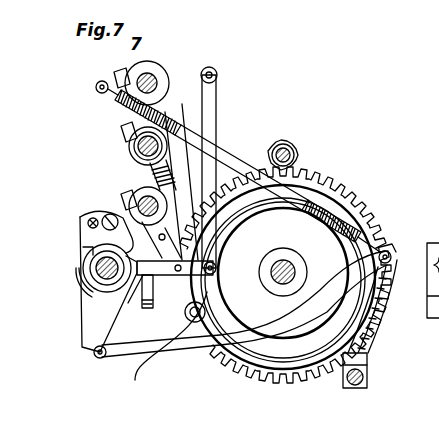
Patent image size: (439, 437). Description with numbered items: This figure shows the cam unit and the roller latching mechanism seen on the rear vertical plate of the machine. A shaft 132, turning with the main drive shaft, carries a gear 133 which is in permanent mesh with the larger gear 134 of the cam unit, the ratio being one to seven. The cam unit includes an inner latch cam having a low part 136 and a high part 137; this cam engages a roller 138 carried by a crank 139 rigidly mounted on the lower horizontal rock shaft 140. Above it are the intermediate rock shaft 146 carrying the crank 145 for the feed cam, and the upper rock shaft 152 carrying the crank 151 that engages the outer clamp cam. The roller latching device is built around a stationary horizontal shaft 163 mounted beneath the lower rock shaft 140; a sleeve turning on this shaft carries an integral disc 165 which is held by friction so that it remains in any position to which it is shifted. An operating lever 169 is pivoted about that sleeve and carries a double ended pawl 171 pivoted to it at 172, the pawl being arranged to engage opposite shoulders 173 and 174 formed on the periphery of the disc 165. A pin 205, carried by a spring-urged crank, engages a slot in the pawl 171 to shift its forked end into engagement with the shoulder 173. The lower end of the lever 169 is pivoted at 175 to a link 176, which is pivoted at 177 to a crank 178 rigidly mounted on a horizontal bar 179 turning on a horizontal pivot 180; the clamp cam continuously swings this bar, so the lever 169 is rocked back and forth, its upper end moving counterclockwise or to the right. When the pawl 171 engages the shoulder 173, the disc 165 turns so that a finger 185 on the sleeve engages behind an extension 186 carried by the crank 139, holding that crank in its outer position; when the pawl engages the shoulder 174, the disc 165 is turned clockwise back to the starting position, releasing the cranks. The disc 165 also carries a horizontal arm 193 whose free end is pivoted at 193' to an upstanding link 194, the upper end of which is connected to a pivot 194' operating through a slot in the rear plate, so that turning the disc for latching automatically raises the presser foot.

The larger gear 134 is at (277, 368).
The high part of latch cam 137 is at (313, 352).
The low part of latch cam 136 is at (277, 207).
The crank 139 is at (212, 283).
The roller 138 is at (200, 325).
The upstanding link 194 is at (233, 171).
The pivot 194' is at (236, 76).
The pivotal connection 193' is at (235, 259).
The crank 151 is at (215, 158).
The upper rock shaft 152 is at (152, 78).
The intermediate horizontal rock shaft 146 is at (132, 142).
The crank 145 is at (134, 150).
The lower horizontal rock shaft 140 is at (139, 198).
The pivot of pawl 172 is at (104, 216).
The double ended pawl 171 is at (97, 218).
The pin 205 is at (88, 224).
The horizontal crank or arm 193 is at (170, 300).
The shoulder 174 is at (97, 259).
The shoulder 173 is at (90, 252).
The annular flange or disc 165 is at (86, 283).
The operating lever 169 is at (93, 313).
The horizontal shaft 163 is at (94, 319).
The finger 185 is at (130, 303).
The pivotal connection 175 is at (96, 357).
The link 176 is at (182, 342).
The extension 186 is at (171, 342).
The pivotal connection 177 is at (392, 248).
The crank 178 is at (389, 305).
The horizontal bar 179 is at (366, 367).
The horizontal pivot 180 is at (355, 387).
The shaft 132 is at (296, 158).
The gear 133 is at (284, 143).